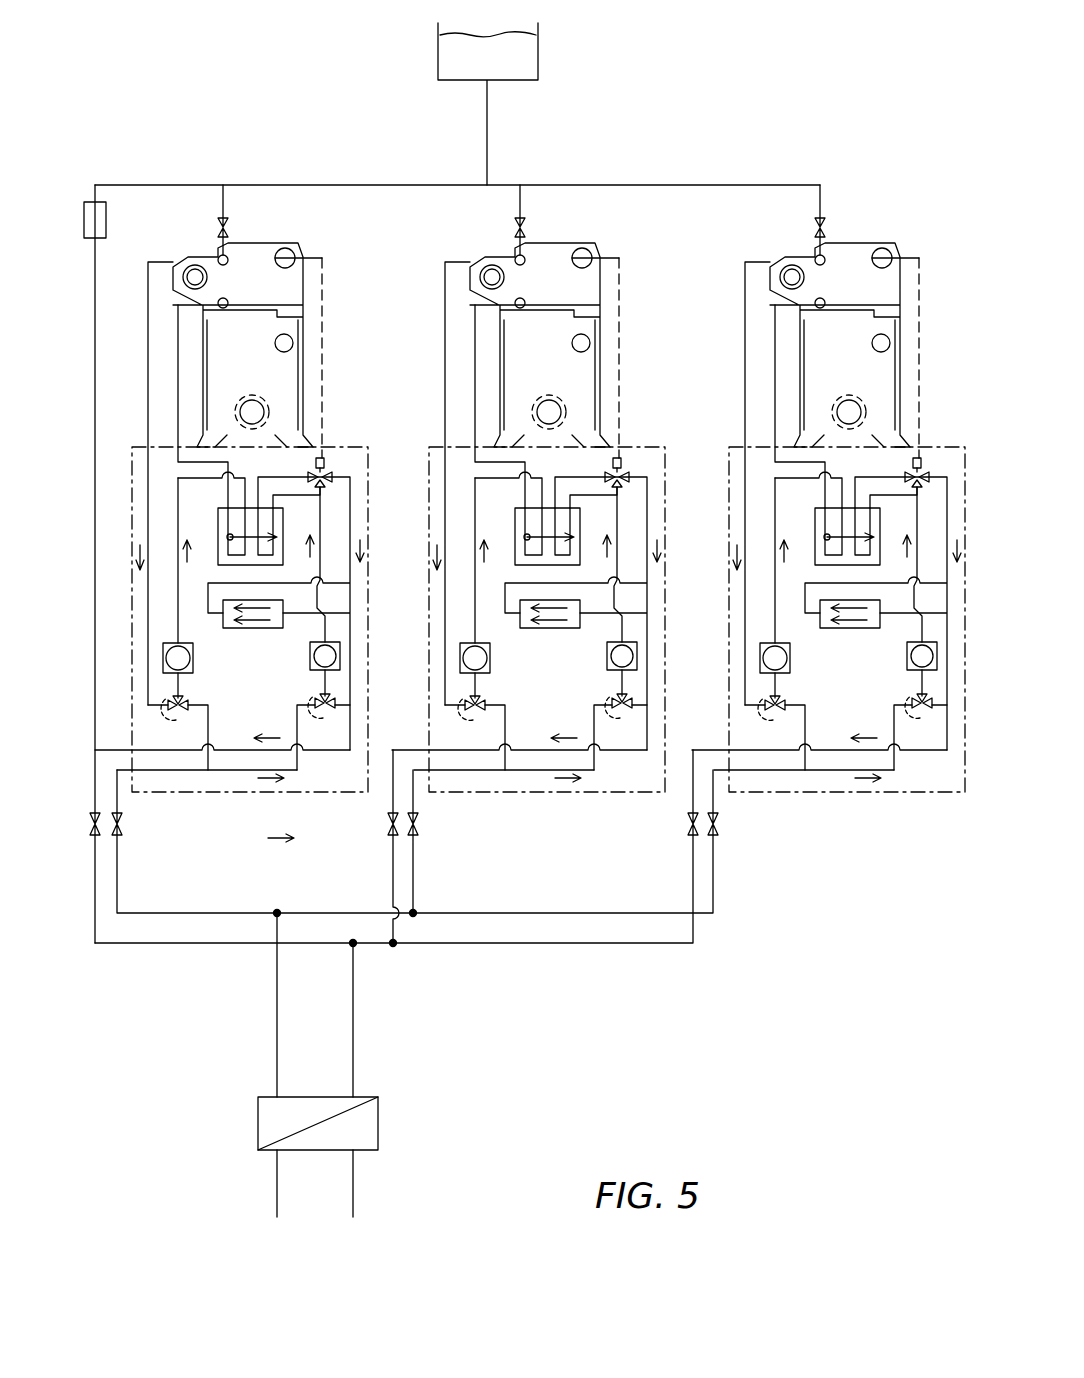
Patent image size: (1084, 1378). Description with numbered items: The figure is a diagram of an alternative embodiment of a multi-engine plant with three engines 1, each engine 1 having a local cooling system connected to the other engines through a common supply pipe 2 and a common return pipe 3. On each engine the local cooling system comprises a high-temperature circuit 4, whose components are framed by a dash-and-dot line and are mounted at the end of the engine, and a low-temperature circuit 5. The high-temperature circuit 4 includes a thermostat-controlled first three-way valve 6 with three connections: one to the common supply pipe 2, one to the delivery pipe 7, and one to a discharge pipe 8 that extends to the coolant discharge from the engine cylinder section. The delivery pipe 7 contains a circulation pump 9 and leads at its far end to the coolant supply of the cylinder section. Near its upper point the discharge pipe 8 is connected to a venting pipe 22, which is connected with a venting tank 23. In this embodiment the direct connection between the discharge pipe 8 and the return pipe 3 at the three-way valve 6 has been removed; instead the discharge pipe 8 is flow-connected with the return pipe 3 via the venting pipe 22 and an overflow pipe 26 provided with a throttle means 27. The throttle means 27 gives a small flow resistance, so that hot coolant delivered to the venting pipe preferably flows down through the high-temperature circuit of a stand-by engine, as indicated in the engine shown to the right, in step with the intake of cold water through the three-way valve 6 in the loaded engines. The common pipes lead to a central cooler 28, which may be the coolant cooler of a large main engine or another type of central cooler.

The engine 1 is at (927, 282).
The common supply pipe 2 is at (150, 912).
The common return pipe 3 is at (145, 950).
The high-temperature circuit 4 is at (756, 585).
The low-temperature circuit 5 is at (642, 512).
The first three-way valve 6 is at (780, 706).
The delivery pipe 7 is at (775, 622).
The discharge pipe 8 is at (745, 310).
The circulation pump 9 is at (802, 657).
The venting pipe 22 is at (342, 184).
The venting tank 23 is at (530, 58).
The overflow pipe 26 is at (100, 282).
The throttle means 27 is at (108, 226).
The central cooler 28 is at (380, 1118).